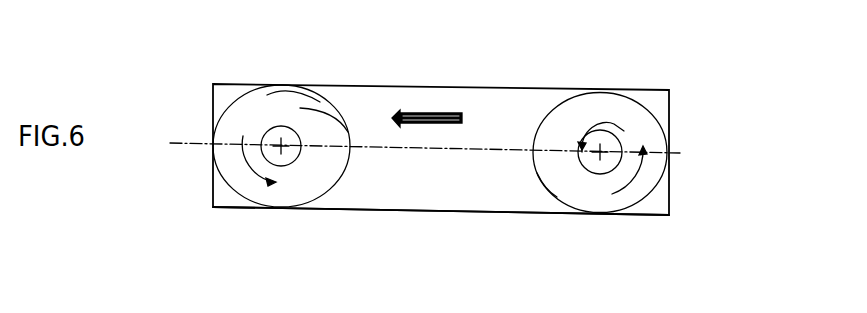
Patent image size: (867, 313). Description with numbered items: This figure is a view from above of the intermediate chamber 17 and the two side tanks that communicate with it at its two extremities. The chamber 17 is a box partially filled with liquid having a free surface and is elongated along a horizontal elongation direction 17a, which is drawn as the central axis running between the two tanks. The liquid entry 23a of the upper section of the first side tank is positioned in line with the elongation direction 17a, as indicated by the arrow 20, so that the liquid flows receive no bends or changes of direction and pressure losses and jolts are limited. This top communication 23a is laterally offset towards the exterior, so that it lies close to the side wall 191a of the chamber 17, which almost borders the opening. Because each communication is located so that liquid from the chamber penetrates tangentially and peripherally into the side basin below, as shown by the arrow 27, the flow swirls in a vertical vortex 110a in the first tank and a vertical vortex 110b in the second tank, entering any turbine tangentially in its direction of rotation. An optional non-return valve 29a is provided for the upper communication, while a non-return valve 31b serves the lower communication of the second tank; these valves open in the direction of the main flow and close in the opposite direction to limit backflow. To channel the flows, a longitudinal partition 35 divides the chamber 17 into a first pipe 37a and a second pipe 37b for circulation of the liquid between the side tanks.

The intermediate chamber 17 is at (494, 104).
The elongation direction 17a is at (183, 148).
The arrow 20 is at (429, 112).
The liquid entry 23a is at (327, 103).
The arrow 27 is at (258, 182).
The non-return valve 29a is at (340, 103).
The non-return valve 31b is at (540, 177).
The longitudinal partition 35 is at (441, 180).
The first pipe 37a is at (530, 102).
The second pipe 37b is at (386, 195).
The vertical vortex 110a is at (281, 146).
The vertical vortex 110b is at (603, 151).
The side wall 191a is at (307, 83).